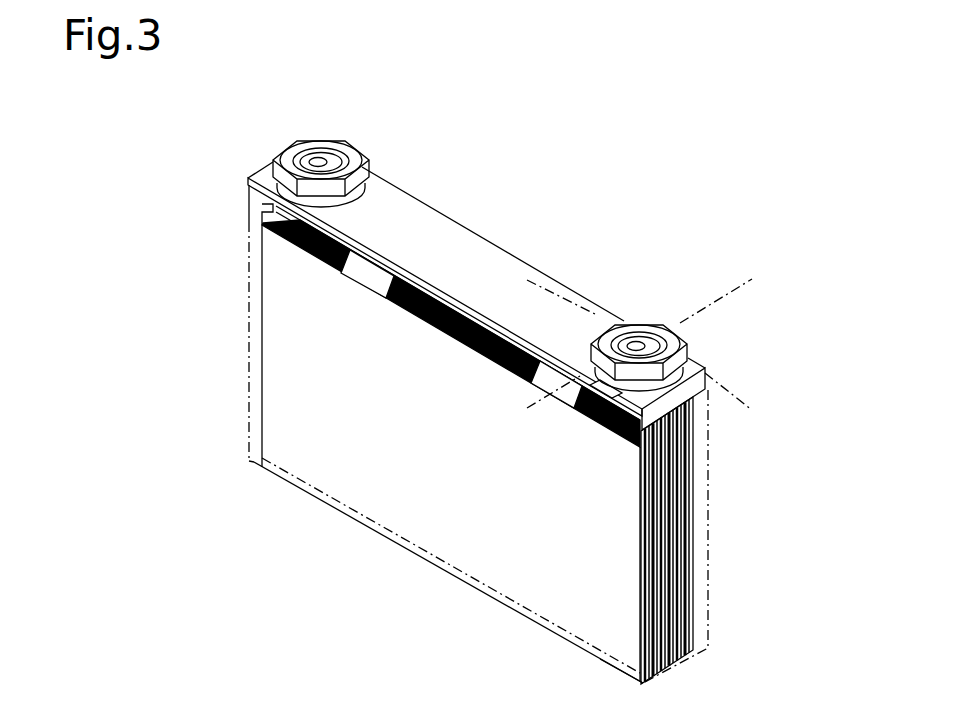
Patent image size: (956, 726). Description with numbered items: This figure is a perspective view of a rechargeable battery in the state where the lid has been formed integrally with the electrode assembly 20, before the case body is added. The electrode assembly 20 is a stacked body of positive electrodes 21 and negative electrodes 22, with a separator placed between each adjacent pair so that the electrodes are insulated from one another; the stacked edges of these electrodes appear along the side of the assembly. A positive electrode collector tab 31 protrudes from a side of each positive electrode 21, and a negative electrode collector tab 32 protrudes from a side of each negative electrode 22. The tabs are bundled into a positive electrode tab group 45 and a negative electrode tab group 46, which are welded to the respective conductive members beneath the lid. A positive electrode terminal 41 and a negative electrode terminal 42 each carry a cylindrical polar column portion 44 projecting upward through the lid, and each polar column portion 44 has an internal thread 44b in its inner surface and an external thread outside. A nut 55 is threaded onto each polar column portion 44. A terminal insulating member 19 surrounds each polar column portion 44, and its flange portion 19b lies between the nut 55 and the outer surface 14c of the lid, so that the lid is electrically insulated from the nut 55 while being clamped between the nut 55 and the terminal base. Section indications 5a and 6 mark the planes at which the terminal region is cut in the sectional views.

The outer surface of the lid 14c is at (498, 250).
The terminal insulating member 19 is at (332, 204).
The flange portion 19b is at (280, 177).
The electrode assembly 20 is at (699, 536).
The positive electrode 21 is at (645, 680).
The negative electrode 22 is at (680, 655).
The positive electrode collector tab 31 is at (530, 383).
The negative electrode collector tab 32 is at (352, 270).
The positive electrode terminal 41 is at (653, 342).
The negative electrode terminal 42 is at (358, 162).
The polar column portion 44 is at (345, 157).
The internal thread 44b is at (318, 160).
The positive electrode tab group 45 is at (509, 379).
The negative electrode tab group 46 is at (374, 299).
The nut 55 is at (360, 186).
The section line 5a is at (527, 280).
The section line 6 is at (527, 408).